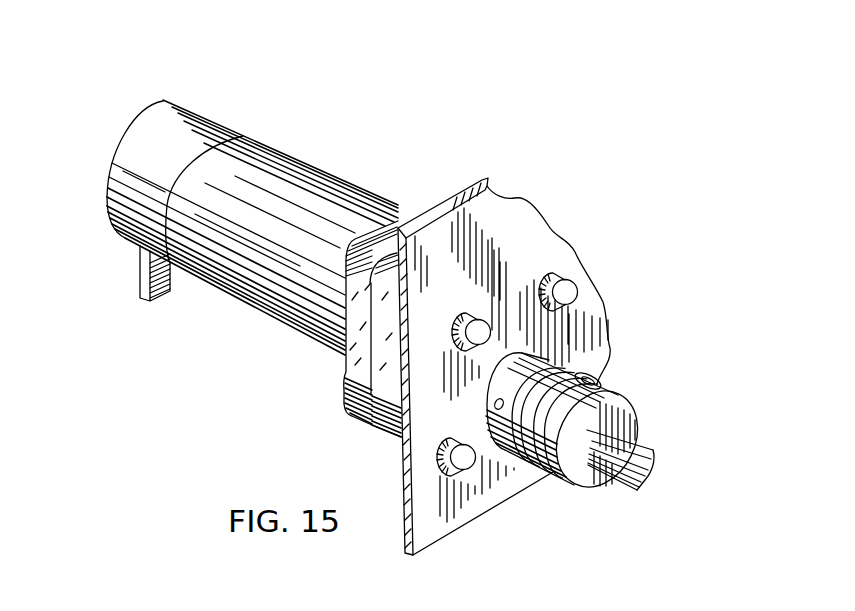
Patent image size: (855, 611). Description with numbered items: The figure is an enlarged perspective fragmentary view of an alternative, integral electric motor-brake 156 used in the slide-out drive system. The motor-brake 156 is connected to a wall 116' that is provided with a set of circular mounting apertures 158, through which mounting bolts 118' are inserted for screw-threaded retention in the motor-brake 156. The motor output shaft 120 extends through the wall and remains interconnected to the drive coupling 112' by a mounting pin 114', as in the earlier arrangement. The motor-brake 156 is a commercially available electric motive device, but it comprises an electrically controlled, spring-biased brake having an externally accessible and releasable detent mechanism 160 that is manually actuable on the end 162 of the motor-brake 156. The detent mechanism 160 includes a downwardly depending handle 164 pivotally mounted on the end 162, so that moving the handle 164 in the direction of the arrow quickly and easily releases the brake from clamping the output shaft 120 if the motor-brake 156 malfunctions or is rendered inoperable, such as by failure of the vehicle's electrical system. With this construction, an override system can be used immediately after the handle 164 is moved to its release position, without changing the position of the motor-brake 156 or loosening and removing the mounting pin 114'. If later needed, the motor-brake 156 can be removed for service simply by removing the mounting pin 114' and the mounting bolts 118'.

The detent mechanism 160 is at (234, 208).
The end 162 is at (166, 98).
The handle 164 is at (137, 297).
The motor-brake 156 is at (385, 206).
The wall 116' is at (504, 365).
The mounting apertures 158 is at (546, 388).
The mounting bolts 118' is at (557, 400).
The mounting pin 114' is at (623, 365).
The drive coupling 112' is at (599, 419).
The motor output shaft 120 is at (649, 457).